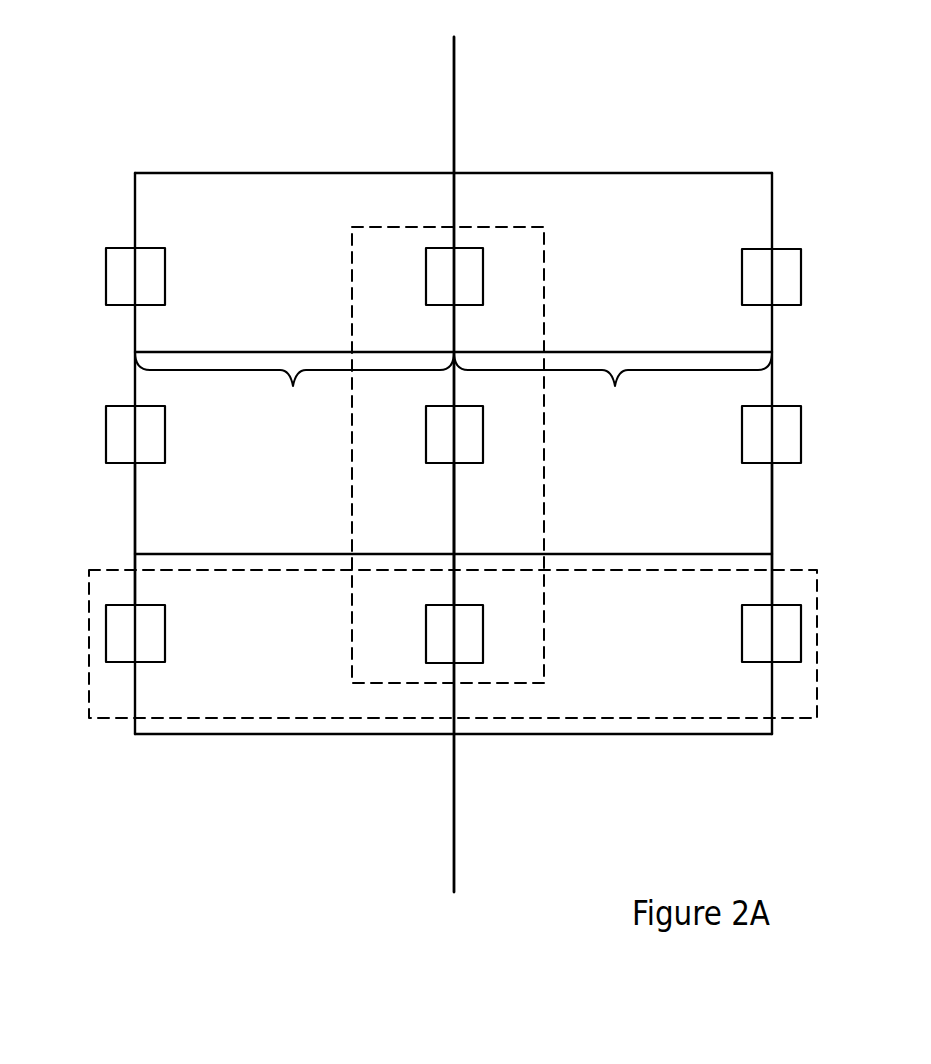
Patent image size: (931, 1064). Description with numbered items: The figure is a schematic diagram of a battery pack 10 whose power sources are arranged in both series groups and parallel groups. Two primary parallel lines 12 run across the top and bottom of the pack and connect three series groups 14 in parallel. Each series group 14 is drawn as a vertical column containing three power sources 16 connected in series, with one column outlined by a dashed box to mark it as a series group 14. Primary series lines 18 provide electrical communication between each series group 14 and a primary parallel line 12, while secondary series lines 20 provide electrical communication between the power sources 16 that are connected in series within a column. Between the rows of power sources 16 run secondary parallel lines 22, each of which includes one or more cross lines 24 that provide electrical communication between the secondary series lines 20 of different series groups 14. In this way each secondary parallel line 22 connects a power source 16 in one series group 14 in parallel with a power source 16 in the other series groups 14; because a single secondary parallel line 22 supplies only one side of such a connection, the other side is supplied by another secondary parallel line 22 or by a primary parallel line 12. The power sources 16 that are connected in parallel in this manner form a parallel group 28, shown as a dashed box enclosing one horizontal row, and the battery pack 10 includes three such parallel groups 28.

The battery pack 10 is at (685, 95).
The primary parallel line 12 is at (272, 173).
The series group 14 is at (544, 333).
The power source 16 is at (790, 250).
The primary series line 18 is at (135, 200).
The secondary series line 20 is at (135, 515).
The secondary parallel line 22 is at (662, 346).
The cross line 24 is at (453, 391).
The parallel group 28 is at (88, 643).